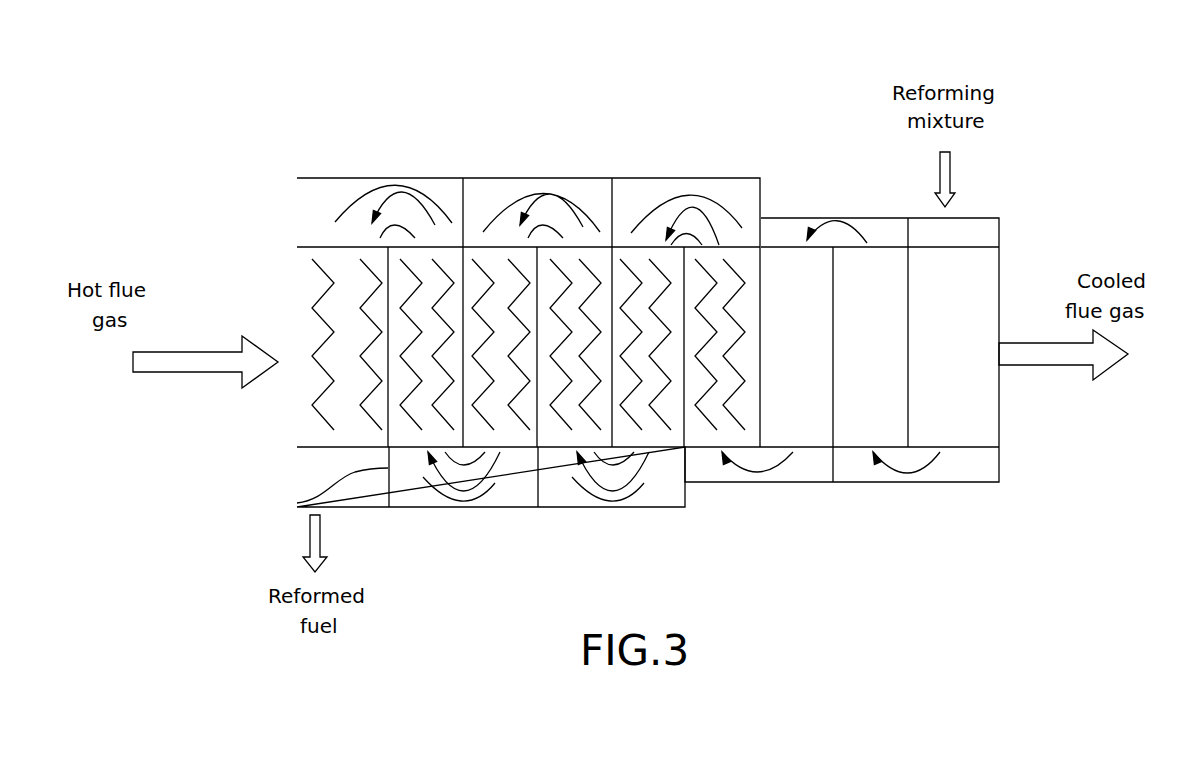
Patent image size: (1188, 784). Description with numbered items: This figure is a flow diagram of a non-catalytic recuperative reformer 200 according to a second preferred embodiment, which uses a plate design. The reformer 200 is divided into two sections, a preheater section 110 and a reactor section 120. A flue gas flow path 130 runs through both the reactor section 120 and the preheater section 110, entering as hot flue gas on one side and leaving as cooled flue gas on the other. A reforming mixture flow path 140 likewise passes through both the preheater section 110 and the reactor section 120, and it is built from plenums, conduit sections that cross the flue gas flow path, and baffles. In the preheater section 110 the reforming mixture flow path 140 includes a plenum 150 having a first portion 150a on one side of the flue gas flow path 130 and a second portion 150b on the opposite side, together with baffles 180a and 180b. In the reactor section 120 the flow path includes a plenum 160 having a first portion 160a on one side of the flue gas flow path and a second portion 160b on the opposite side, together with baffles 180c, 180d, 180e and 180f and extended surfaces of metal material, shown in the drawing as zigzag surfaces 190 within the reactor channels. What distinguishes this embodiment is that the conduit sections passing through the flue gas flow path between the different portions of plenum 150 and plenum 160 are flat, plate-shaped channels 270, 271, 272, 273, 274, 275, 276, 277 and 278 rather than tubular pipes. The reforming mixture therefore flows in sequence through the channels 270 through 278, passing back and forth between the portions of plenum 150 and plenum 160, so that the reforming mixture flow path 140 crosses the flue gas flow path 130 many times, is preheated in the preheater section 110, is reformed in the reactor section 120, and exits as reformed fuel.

The reformer 200 is at (1004, 665).
The preheater section 110 is at (818, 168).
The reactor section 120 is at (444, 120).
The flue gas flow path 130 is at (297, 298).
The reforming mixture flow path 140 is at (980, 215).
The plenum 150 is at (998, 500).
The first portion of plenum 150a is at (987, 241).
The second portion of plenum 150b is at (987, 456).
The plenum 160 is at (318, 162).
The first portion of plenum 160a is at (312, 203).
The second portion of plenum 160b is at (308, 458).
The baffle 180a is at (908, 220).
The baffle 180b is at (833, 460).
The baffle 180c is at (612, 215).
The baffle 180d is at (537, 480).
The baffle 180e is at (463, 205).
The baffle 180f is at (297, 503).
The catalyst 190 is at (323, 276).
The channel 270 is at (962, 418).
The channel 271 is at (863, 432).
The channel 272 is at (800, 418).
The channel 273 is at (723, 403).
The channel 274 is at (665, 407).
The channel 275 is at (565, 410).
The channel 276 is at (510, 410).
The channel 277 is at (423, 408).
The channel 278 is at (345, 400).